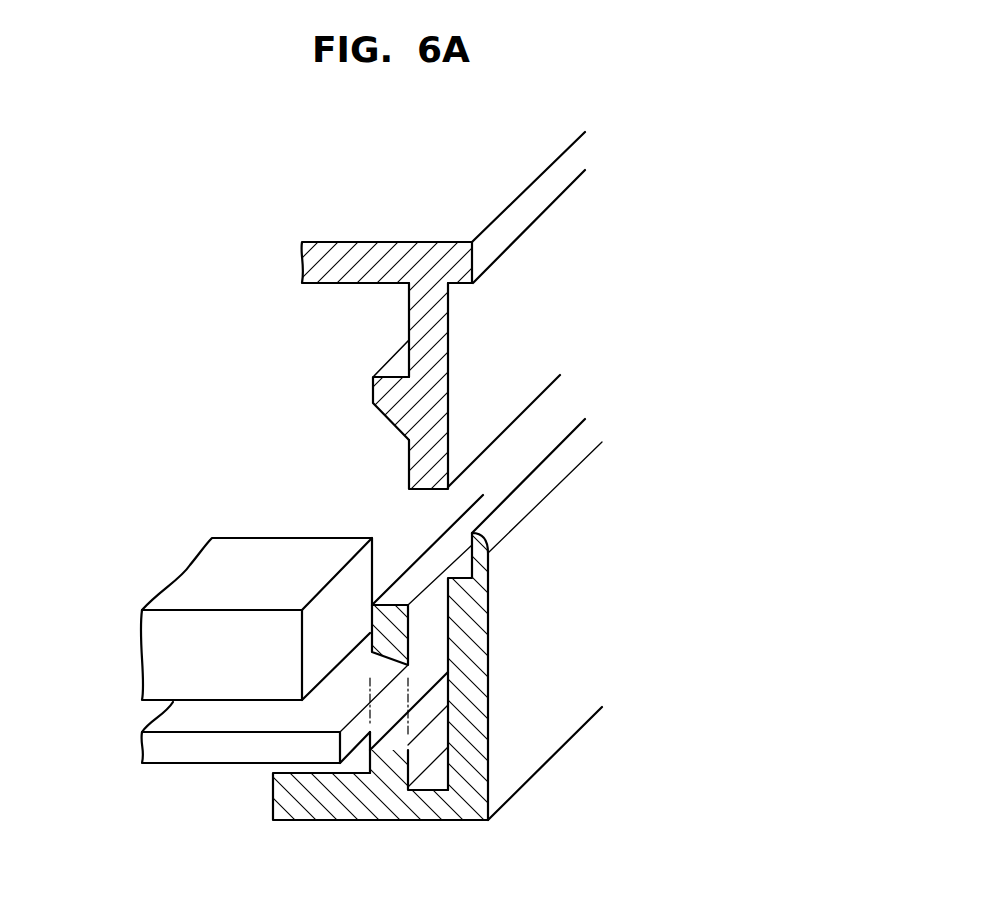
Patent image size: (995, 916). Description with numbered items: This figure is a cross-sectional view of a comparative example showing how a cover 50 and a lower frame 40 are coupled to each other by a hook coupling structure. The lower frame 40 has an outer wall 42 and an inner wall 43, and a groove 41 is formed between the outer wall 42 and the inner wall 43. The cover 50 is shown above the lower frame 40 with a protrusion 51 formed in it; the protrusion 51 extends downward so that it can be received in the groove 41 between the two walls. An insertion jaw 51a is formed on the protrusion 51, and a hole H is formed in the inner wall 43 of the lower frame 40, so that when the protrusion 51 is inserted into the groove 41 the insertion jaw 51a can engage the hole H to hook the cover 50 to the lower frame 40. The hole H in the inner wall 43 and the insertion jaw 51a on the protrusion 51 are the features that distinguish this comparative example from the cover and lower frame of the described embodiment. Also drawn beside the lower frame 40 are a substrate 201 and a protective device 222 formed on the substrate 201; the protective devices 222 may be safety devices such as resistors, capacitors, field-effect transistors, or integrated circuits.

The cover 50 is at (535, 208).
The protrusion 51 is at (437, 395).
The insertion jaw 51a is at (378, 390).
The protective device 222 is at (153, 657).
The substrate 201 is at (152, 747).
The lower frame 40 is at (548, 747).
The groove 41 is at (435, 780).
The outer wall 42 is at (473, 672).
The inner wall 43 is at (400, 746).
The hole H is at (392, 718).